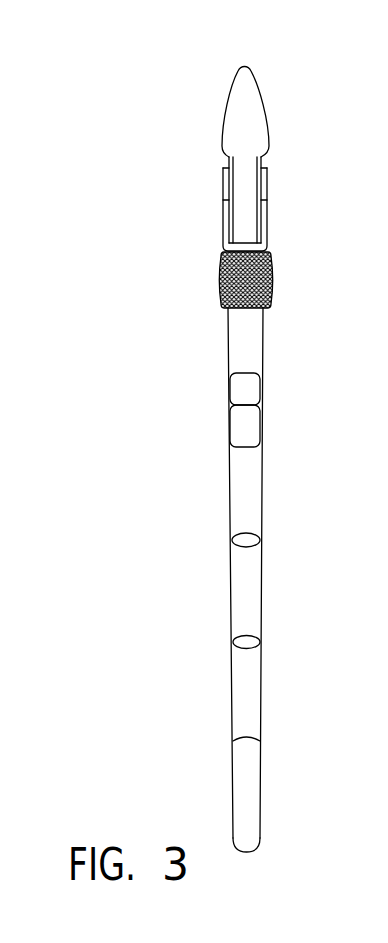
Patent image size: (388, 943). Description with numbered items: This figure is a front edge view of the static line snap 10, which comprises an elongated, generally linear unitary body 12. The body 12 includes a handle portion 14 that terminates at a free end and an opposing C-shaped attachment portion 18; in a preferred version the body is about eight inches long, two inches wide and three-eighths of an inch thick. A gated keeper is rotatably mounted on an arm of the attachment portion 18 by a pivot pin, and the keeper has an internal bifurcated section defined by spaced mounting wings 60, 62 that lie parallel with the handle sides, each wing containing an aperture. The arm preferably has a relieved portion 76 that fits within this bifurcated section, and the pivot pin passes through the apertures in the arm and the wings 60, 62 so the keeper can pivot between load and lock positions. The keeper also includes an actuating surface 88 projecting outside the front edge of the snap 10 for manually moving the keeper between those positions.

The static line snap 10 is at (150, 461).
The body 12 is at (262, 392).
The handle portion 14 is at (260, 508).
The attachment portion 18 is at (259, 87).
The mounting wing 60 is at (222, 185).
The mounting wing 62 is at (268, 190).
The relieved portion 76 is at (265, 160).
The actuating surface 88 is at (271, 292).